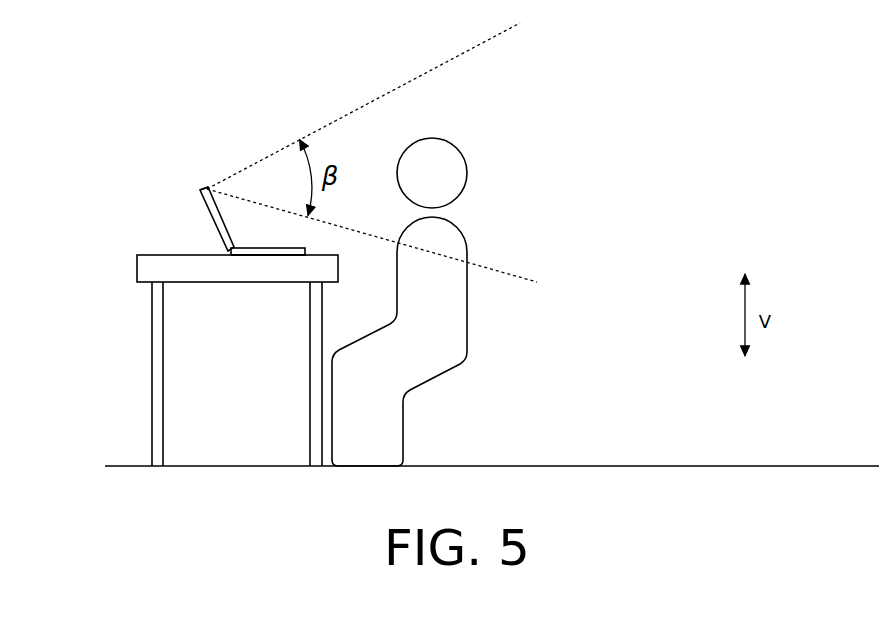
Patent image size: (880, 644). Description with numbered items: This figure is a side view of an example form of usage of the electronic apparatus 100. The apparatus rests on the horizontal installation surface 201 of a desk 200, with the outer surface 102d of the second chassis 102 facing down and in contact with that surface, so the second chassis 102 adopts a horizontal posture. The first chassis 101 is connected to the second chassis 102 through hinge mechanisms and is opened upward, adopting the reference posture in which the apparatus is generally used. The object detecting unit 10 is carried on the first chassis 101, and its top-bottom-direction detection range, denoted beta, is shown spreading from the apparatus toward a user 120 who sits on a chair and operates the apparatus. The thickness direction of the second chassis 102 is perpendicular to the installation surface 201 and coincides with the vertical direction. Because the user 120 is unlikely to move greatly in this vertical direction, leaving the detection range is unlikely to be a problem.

The electronic apparatus 100 is at (221, 227).
The object detecting unit 10 is at (210, 188).
The first chassis 101 is at (208, 213).
The second chassis 102 is at (283, 257).
The outer surface 102d is at (252, 257).
The user 120 is at (457, 220).
The desk 200 is at (190, 329).
The installation surface 201 is at (158, 255).